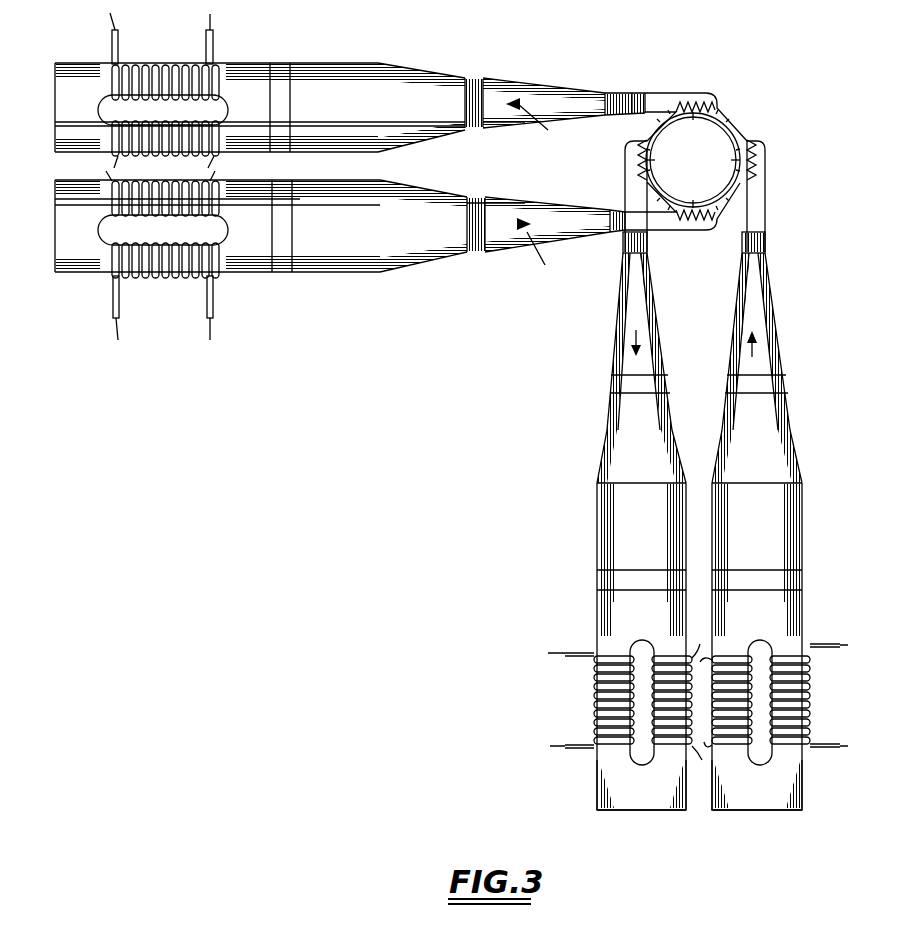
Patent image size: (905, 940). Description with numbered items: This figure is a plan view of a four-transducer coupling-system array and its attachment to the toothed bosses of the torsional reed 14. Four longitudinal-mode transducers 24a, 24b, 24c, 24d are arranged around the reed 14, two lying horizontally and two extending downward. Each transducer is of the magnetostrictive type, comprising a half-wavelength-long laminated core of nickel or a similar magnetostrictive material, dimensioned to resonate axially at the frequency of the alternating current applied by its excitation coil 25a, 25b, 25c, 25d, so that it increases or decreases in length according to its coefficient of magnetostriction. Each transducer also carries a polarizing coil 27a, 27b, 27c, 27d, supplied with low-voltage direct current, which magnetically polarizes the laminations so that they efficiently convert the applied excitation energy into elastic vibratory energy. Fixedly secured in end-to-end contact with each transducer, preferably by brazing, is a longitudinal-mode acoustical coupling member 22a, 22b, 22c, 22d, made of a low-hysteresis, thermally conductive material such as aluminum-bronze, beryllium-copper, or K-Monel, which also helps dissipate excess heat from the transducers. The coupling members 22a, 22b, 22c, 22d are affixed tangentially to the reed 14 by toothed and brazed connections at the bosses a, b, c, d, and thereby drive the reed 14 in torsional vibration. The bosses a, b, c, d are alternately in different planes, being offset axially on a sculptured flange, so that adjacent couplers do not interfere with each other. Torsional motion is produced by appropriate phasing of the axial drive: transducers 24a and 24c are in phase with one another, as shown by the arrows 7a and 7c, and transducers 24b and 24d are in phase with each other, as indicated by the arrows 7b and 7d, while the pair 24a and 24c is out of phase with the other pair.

The torsional reed 14 is at (725, 118).
The longitudinal-mode acoustical coupling member 22a is at (435, 75).
The longitudinal-mode acoustical coupling member 22b is at (435, 262).
The longitudinal-mode acoustical coupling member 22c is at (597, 482).
The longitudinal-mode acoustical coupling member 22d is at (782, 392).
The longitudinal-mode transducer 24a is at (222, 64).
The longitudinal-mode transducer 24b is at (238, 272).
The longitudinal-mode transducer 24c is at (600, 790).
The longitudinal-mode transducer 24d is at (760, 812).
The excitation coil 25a is at (195, 60).
The excitation coil 25b is at (118, 196).
The excitation coil 25c is at (596, 695).
The excitation coil 25d is at (738, 655).
The polarizing coil 27a is at (115, 137).
The polarizing coil 27b is at (205, 276).
The polarizing coil 27c is at (675, 655).
The polarizing coil 27d is at (808, 668).
The arrow 7a is at (534, 126).
The arrow 7b is at (541, 253).
The arrow 7c is at (628, 345).
The arrow 7d is at (745, 345).
The toothed boss a is at (689, 124).
The toothed boss b is at (691, 194).
The toothed boss c is at (655, 152).
The toothed boss d is at (728, 152).